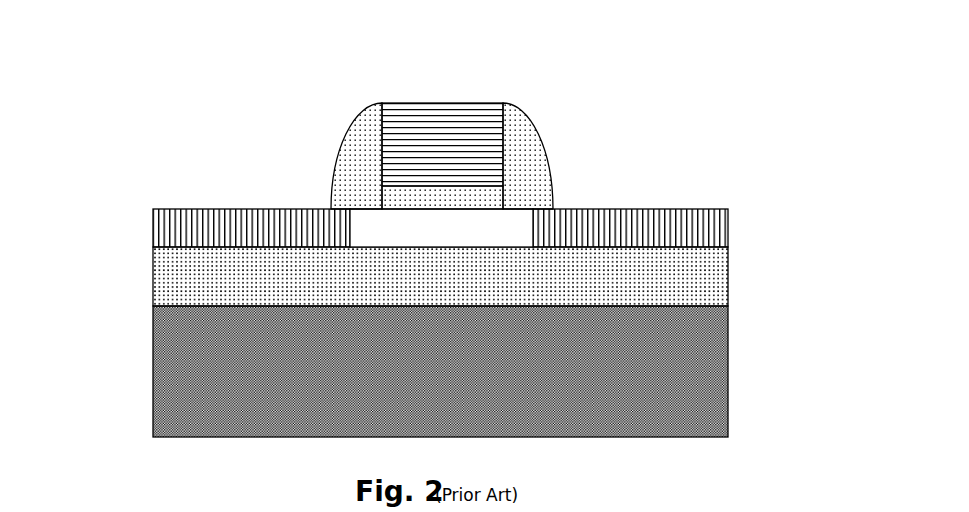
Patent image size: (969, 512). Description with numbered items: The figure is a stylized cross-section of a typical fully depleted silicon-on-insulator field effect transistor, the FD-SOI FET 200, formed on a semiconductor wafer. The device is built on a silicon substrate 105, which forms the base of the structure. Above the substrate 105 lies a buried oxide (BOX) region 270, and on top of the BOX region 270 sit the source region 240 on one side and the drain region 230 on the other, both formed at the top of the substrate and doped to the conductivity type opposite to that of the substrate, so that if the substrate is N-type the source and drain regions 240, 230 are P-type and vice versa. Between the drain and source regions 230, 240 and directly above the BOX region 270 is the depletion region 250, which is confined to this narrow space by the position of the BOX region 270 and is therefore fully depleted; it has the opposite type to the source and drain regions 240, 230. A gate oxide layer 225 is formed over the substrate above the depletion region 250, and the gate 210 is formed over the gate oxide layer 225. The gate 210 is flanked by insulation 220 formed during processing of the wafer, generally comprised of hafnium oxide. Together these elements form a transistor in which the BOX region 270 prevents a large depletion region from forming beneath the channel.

The FD-SOI FET 200 is at (410, 227).
The substrate 105 is at (185, 383).
The buried oxide (BOX) region 270 is at (183, 290).
The source region 240 is at (160, 213).
The drain region 230 is at (608, 213).
The depletion region 250 is at (480, 212).
The insulation 220 is at (535, 127).
The gate oxide layer 225 is at (373, 185).
The gate 210 is at (452, 103).